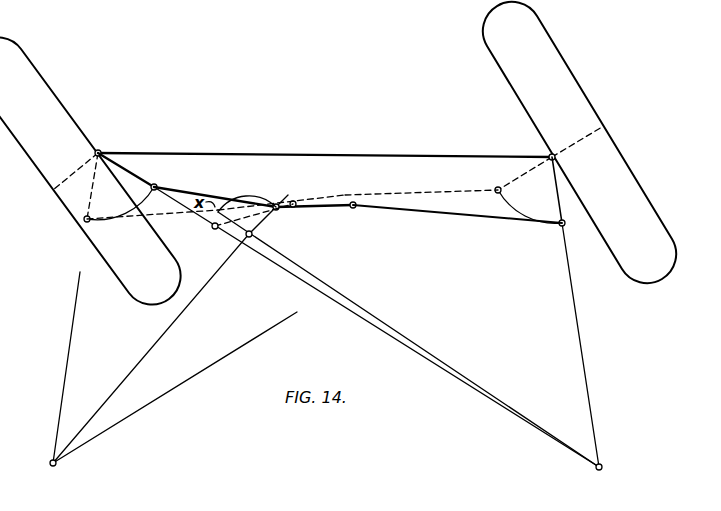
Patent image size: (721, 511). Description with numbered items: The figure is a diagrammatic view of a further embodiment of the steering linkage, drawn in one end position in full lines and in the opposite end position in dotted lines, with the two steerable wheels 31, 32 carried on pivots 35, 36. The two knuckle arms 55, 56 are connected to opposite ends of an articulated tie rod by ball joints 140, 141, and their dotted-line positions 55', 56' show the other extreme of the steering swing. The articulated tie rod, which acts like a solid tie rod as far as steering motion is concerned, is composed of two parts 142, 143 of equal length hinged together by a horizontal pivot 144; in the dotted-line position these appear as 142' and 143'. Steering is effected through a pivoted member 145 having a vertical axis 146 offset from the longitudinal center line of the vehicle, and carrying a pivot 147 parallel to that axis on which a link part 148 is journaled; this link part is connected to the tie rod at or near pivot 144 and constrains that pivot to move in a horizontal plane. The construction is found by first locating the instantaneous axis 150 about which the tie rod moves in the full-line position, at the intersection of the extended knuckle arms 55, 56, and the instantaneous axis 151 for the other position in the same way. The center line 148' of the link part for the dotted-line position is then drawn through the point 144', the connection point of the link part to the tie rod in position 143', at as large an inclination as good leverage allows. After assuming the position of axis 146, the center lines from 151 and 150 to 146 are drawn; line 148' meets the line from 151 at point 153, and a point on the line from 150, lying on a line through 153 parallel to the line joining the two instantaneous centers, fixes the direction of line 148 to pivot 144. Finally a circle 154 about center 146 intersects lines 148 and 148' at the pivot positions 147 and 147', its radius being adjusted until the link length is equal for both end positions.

The left ski 31 is at (33, 89).
The right ski 32 is at (618, 172).
The left pivot on ski 35 is at (100, 150).
The right pivot on ski 36 is at (549, 155).
The knuckle arm 55 is at (129, 170).
The left crank link alternate position 55' is at (108, 204).
The knuckle arm 56 is at (542, 190).
The right crank link alternate position 56' is at (524, 193).
The ball joint 140 is at (158, 187).
The ball joint 141 is at (558, 227).
The tie rod part 142 is at (310, 191).
The link alternate position 142' is at (152, 225).
The tie rod part 143 is at (457, 228).
The dotted line position of tie rod 143' is at (421, 182).
The horizontal pivot 144 is at (371, 219).
The point of connection in dotted line position 144' is at (294, 196).
The pivoted member 145 is at (268, 201).
The vertical axis 146 is at (253, 236).
The pivot 147 is at (282, 214).
The pivot position in dotted line position 147' is at (240, 239).
The link part 148 is at (314, 223).
The center line of link part 148' is at (215, 190).
The instantaneous axis 150 is at (603, 467).
The instantaneous axis 151 is at (57, 463).
The point 153 is at (283, 193).
The circle 154 is at (246, 193).